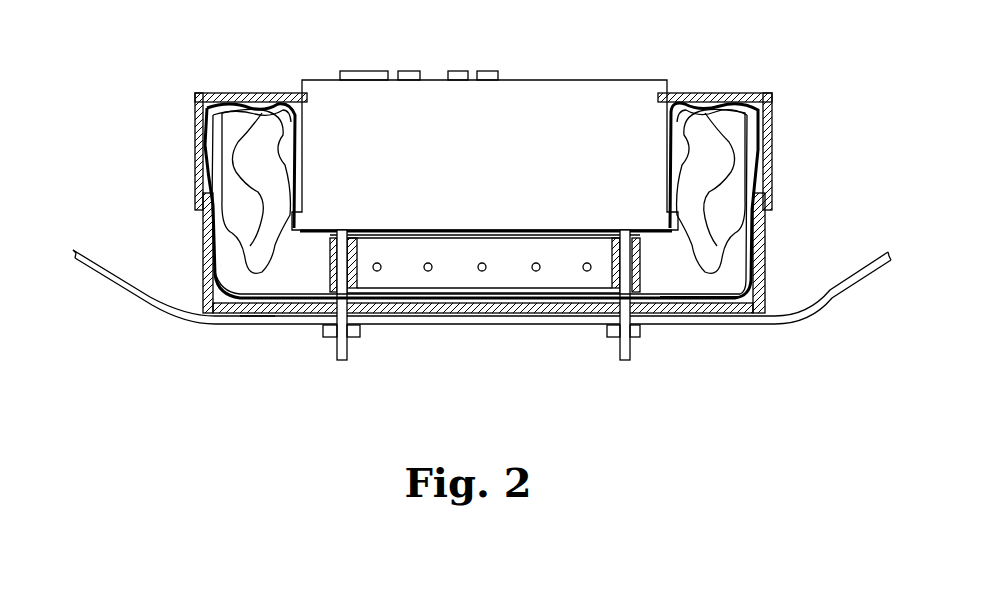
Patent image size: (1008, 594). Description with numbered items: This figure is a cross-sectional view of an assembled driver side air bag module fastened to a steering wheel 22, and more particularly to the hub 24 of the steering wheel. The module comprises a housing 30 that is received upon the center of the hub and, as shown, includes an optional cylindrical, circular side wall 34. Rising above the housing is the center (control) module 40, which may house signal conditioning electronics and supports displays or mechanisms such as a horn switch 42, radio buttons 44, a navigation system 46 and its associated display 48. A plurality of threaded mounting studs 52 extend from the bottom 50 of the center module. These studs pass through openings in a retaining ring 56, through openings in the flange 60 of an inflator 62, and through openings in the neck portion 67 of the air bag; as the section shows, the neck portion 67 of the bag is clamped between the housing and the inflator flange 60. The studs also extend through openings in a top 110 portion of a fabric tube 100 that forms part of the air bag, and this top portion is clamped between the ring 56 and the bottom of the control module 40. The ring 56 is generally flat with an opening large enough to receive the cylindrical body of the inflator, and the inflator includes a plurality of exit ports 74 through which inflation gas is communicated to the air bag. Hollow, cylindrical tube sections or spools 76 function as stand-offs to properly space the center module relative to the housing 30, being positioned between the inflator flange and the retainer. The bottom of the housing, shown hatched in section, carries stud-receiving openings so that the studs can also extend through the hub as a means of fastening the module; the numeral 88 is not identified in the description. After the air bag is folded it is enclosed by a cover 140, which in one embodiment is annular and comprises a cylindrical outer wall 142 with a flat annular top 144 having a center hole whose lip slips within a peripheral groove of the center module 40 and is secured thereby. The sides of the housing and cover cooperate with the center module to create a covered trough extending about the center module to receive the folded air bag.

The steering wheel 22 is at (98, 283).
The hub 24 is at (258, 318).
The housing 30 is at (497, 280).
The side wall 34 is at (202, 268).
The center module 40 is at (487, 118).
The horn switch 42 is at (490, 70).
The radio buttons 44 is at (408, 70).
The navigation system 46 is at (460, 70).
The display 48 is at (362, 70).
The bottom of the center module 50 is at (316, 228).
The threaded mounting studs 52 is at (334, 349).
The retaining ring 56 is at (306, 101).
The inflator flange 60 is at (362, 340).
The inflator 62 is at (483, 330).
The neck portion 67 is at (662, 291).
The exit ports 74 is at (481, 276).
The spools 76 is at (680, 253).
The housing bottom wall 88 is at (578, 307).
The fabric tube 100 is at (652, 246).
The top portion 110 is at (425, 229).
The cover 140 is at (436, 116).
The cylindrical outer wall 142 is at (194, 118).
The flat annular top 144 is at (262, 92).